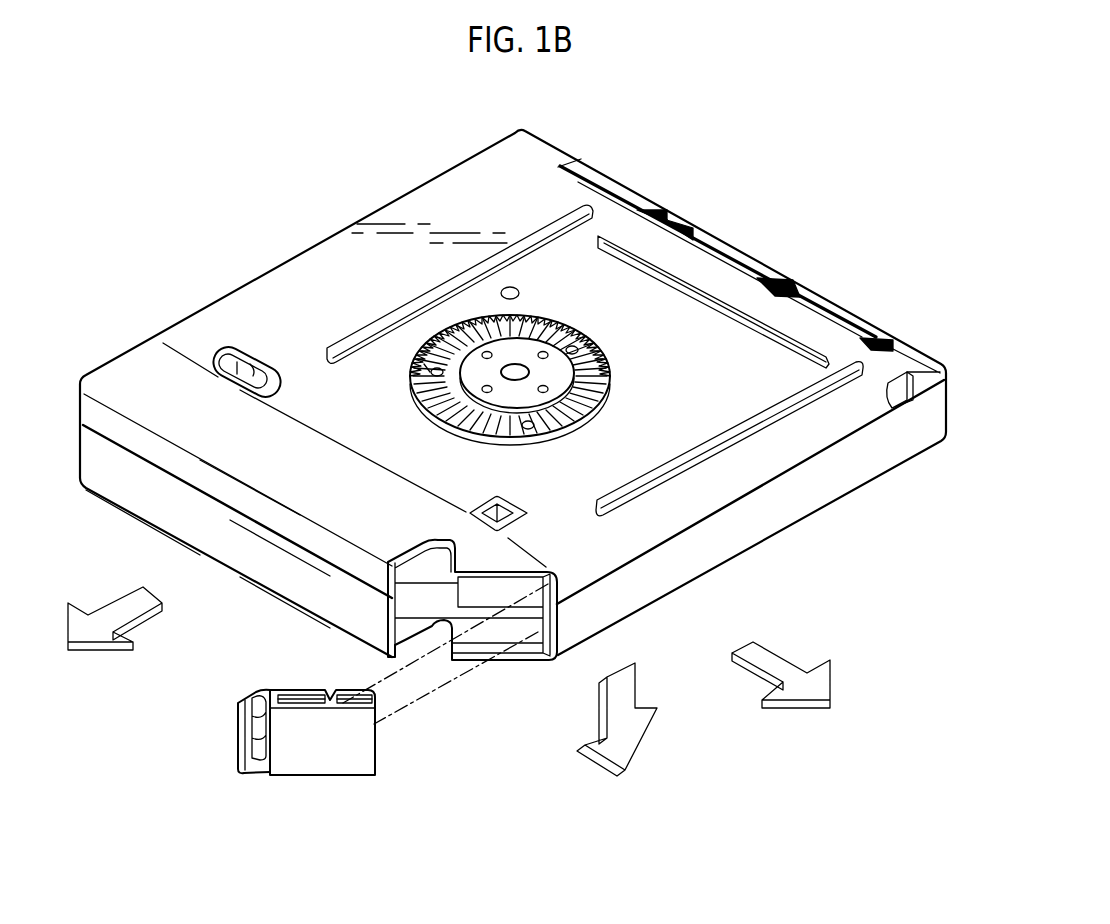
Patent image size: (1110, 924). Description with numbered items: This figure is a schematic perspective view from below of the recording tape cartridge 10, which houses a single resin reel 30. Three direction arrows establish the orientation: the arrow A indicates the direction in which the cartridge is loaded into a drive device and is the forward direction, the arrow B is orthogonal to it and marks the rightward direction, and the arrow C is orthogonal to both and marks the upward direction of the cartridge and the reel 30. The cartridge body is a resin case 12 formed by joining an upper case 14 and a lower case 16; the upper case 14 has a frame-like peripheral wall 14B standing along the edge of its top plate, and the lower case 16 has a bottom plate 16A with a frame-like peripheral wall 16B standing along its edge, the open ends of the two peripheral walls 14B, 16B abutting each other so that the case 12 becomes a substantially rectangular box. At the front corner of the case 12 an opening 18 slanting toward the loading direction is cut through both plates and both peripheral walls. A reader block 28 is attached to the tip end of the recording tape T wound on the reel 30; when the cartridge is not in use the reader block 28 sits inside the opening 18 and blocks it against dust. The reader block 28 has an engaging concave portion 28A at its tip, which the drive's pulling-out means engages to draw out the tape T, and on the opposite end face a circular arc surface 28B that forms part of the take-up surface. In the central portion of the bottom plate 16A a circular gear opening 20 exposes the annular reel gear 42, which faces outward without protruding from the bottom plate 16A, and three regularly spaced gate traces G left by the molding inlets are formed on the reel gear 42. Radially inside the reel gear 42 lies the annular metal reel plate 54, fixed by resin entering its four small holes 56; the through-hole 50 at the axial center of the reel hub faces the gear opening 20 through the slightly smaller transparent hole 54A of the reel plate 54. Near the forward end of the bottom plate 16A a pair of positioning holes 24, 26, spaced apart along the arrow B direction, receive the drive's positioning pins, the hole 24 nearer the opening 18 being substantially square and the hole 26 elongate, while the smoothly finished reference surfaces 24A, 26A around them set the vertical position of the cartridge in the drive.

The recording tape cartridge 10 is at (311, 211).
The case 12 is at (856, 518).
The upper case 14 is at (746, 537).
The peripheral wall 14B is at (322, 605).
The lower case 16 is at (746, 493).
The bottom plate 16A is at (282, 480).
The peripheral wall 16B is at (302, 545).
The opening 18 is at (422, 570).
The gear opening 20 is at (609, 372).
The positioning hole 24 is at (505, 504).
The reference surface 24A is at (488, 507).
The positioning hole 26 is at (262, 376).
The reference surface 26A is at (233, 368).
The reader block 28 is at (400, 757).
The engaging concave portion 28A is at (238, 722).
The circular arc surface 28B is at (380, 700).
The reel 30 is at (614, 347).
The reel gear 42 is at (588, 350).
The through-hole 50 is at (594, 343).
The reel plate 54 is at (521, 346).
The transparent hole 54A is at (625, 407).
The small holes 56 is at (470, 326).
The gate traces G is at (422, 370).
The recording tape T is at (445, 683).
The arrow A is at (127, 602).
The arrow B is at (770, 658).
The arrow C is at (632, 702).